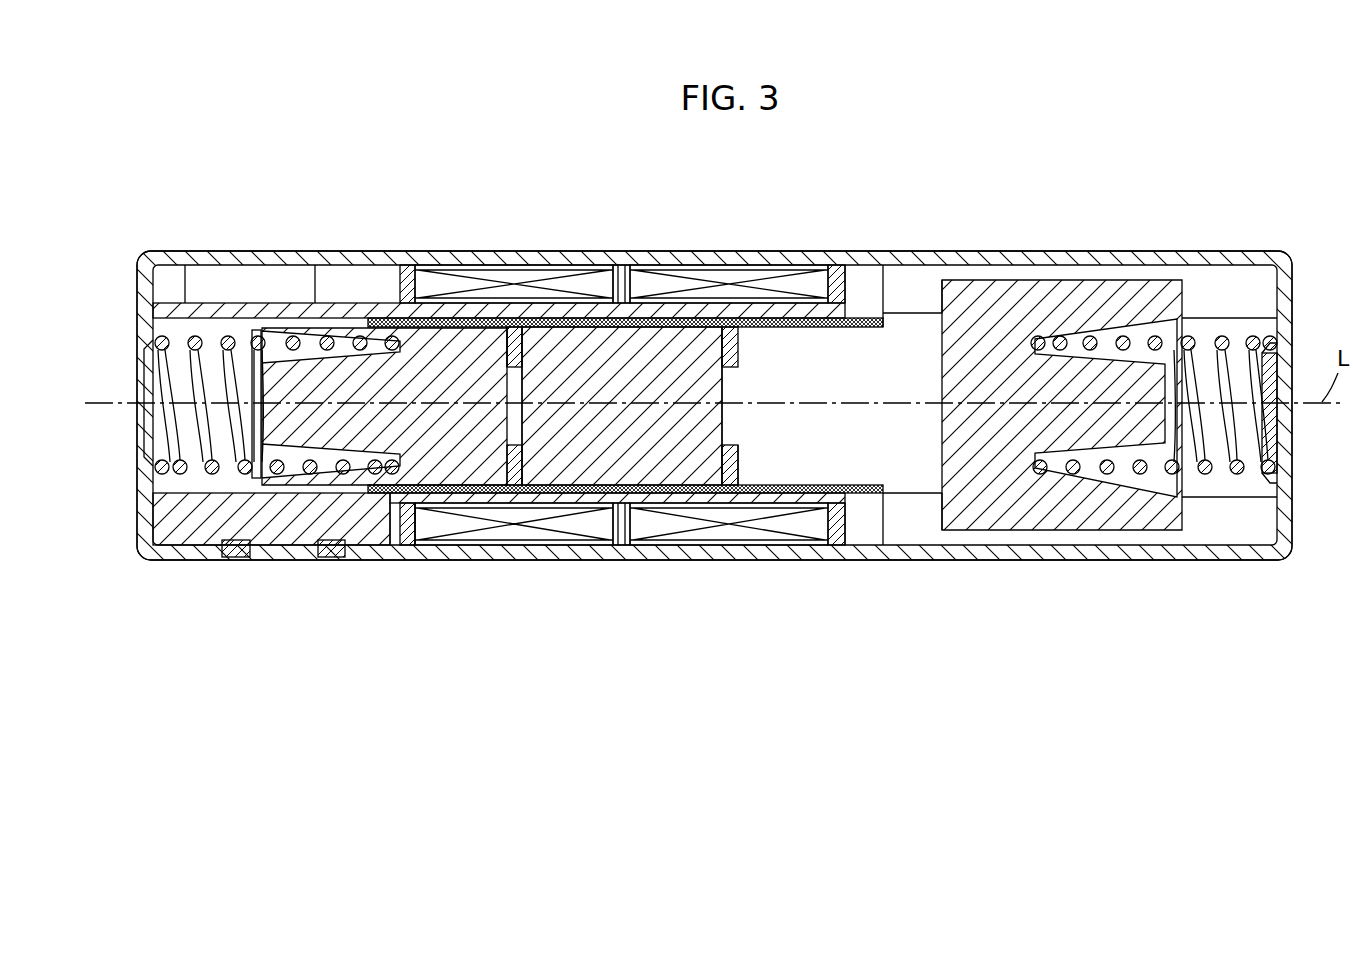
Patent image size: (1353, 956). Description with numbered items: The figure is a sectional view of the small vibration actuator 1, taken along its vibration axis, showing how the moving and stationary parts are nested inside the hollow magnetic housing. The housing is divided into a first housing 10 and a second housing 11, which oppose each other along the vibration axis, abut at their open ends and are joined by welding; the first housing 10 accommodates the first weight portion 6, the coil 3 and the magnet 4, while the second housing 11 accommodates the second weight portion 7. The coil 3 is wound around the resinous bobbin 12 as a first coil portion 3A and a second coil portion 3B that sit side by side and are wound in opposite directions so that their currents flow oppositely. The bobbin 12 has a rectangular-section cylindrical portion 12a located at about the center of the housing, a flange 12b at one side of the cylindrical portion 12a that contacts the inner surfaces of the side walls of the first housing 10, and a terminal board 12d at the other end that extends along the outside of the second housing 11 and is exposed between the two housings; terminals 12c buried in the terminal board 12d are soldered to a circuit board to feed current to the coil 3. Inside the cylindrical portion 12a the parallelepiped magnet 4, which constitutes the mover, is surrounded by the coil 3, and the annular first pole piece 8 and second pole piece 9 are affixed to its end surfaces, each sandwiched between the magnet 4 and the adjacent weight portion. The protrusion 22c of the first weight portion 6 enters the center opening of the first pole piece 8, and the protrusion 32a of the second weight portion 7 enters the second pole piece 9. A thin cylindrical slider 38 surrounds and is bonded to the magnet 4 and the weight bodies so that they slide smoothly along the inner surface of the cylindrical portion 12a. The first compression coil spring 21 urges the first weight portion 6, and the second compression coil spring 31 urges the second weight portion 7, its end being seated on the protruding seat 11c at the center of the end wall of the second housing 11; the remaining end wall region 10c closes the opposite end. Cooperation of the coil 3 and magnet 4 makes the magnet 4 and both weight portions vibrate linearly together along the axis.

The vibration actuator 1 is at (1172, 184).
The coil 3 is at (290, 184).
The first coil portion 3A is at (730, 292).
The second coil portion 3B is at (533, 300).
The magnet 4 is at (661, 457).
The first weight portion 6 is at (985, 492).
The second weight portion 7 is at (443, 464).
The first pole piece 8 is at (720, 500).
The second pole piece 9 is at (512, 472).
The first housing 10 is at (470, 251).
The case end wall 10c is at (1293, 432).
The second housing 11 is at (270, 251).
The protruding seat 11c is at (140, 432).
The bobbin 12 is at (848, 305).
The cylindrical portion 12a is at (588, 497).
The flange 12b is at (862, 300).
The terminals 12c is at (332, 562).
The terminal board 12d is at (360, 548).
The first compression coil spring 21 is at (1210, 487).
The protrusion 22c is at (712, 427).
The second compression coil spring 31 is at (212, 474).
The protrusion 32a is at (533, 420).
The cylindrical slider 38 is at (868, 500).